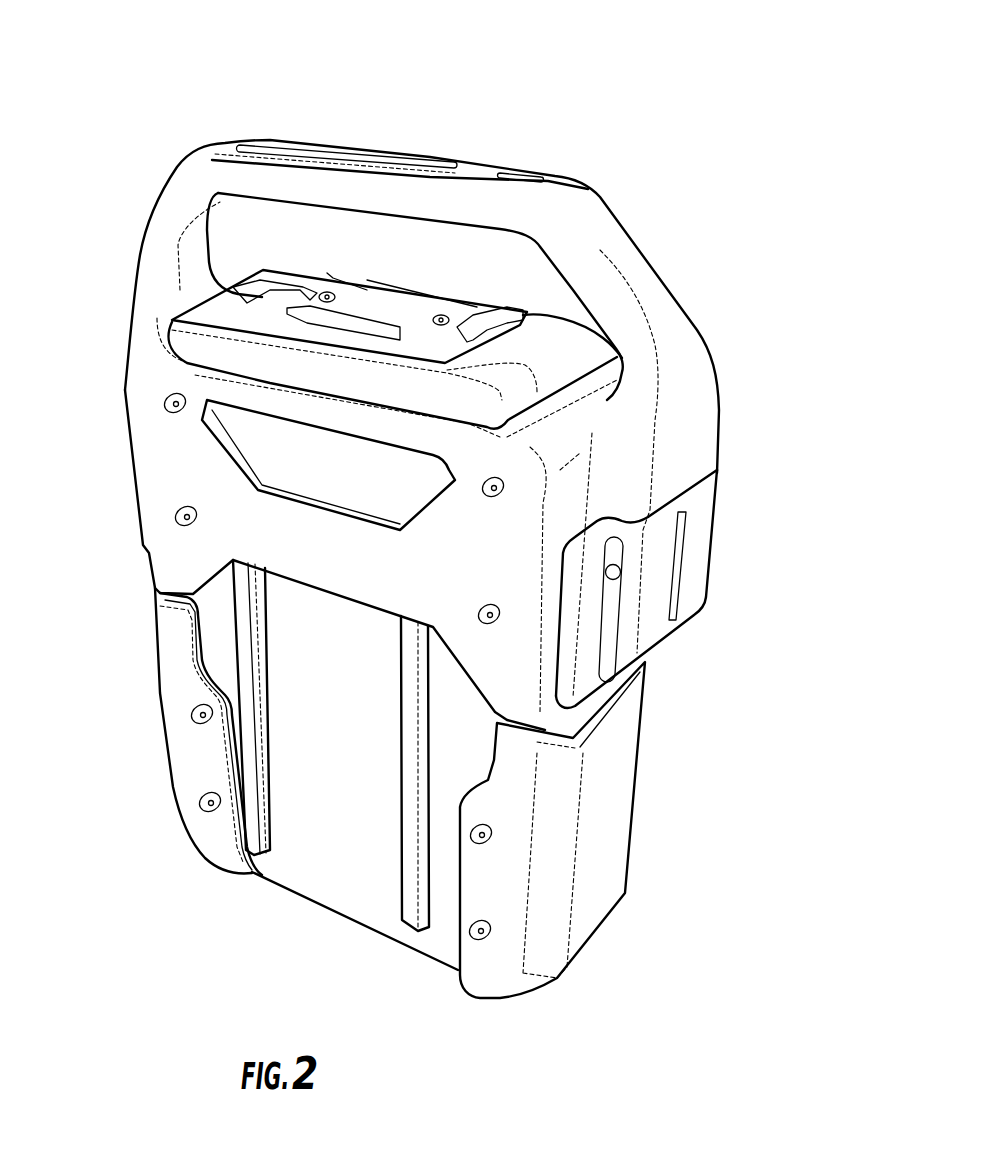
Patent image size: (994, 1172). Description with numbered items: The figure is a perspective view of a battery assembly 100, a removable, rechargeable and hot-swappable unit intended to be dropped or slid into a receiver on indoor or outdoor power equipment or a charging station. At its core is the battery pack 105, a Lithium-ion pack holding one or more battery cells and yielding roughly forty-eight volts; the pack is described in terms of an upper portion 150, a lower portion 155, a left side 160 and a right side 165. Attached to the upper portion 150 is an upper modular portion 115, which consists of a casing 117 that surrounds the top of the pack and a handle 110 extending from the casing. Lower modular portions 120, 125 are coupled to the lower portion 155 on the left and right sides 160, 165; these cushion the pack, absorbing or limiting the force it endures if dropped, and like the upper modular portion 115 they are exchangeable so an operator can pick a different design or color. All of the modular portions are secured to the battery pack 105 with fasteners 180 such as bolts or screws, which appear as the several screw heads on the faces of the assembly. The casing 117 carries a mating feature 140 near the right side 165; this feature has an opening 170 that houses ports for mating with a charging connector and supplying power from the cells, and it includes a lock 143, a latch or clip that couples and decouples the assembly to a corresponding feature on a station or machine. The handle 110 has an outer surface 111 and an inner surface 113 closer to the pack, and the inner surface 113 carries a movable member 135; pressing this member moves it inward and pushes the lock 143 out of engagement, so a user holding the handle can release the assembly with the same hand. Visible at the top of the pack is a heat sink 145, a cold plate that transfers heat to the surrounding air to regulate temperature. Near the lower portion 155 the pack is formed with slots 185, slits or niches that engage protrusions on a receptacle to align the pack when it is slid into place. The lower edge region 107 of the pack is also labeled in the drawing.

The battery assembly 100 is at (438, 541).
The battery pack 105 is at (286, 782).
The lower edge of base plate 107 is at (273, 878).
The handle 110 is at (570, 188).
The outer surface 111 is at (400, 154).
The inner surface 113 is at (260, 203).
The upper modular portion 115 is at (703, 407).
The casing 117 is at (188, 542).
The lower modular portion 120 is at (620, 793).
The lower modular portion 125 is at (180, 735).
The movable member 135 is at (377, 223).
The mating feature 140 is at (678, 589).
The lock 143 is at (620, 572).
The heat sink 145 is at (275, 292).
The upper portion 150 is at (627, 480).
The lower portion 155 is at (593, 867).
The left side 160 is at (149, 700).
The right side 165 is at (697, 600).
The opening 170 is at (677, 639).
The fasteners 180 is at (173, 410).
The slots 185 is at (253, 828).